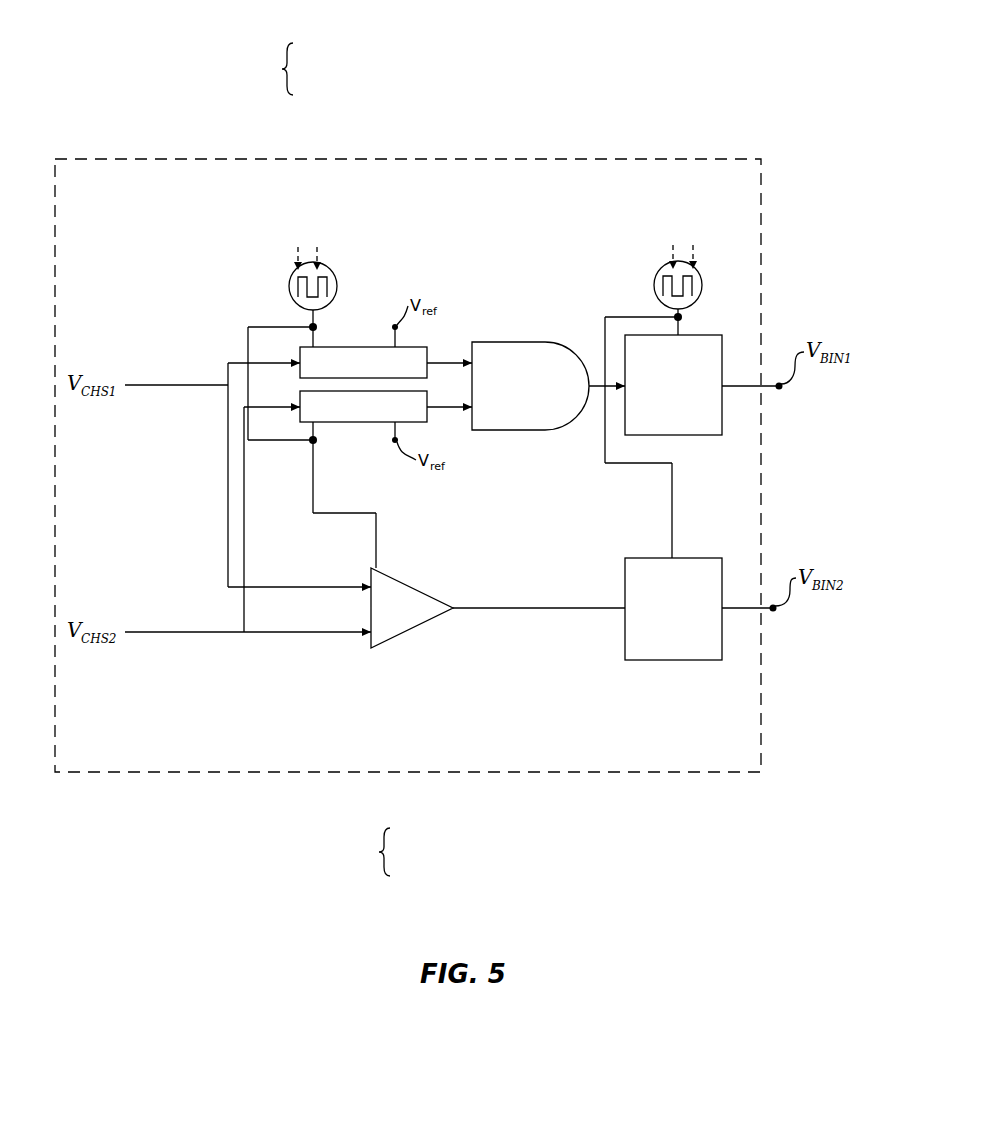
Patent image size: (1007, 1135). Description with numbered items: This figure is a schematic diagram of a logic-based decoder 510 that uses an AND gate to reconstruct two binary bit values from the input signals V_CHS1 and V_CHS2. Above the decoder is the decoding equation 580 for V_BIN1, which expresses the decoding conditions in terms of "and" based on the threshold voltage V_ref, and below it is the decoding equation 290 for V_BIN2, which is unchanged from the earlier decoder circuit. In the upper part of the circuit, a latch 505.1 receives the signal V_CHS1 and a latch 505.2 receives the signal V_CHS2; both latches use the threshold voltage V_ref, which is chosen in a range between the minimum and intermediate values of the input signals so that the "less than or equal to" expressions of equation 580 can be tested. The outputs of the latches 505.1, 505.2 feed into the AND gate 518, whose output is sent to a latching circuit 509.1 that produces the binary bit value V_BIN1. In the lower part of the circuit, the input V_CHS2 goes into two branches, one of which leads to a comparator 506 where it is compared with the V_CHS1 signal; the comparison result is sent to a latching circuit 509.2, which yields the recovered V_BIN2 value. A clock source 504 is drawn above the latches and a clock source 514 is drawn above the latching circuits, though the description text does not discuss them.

The decoding equation for V_BIN1 580 is at (193, 69).
The decoding equation for V_BIN2 290 is at (291, 861).
The logic-based decoder 510 is at (438, 220).
The clock source 504 is at (337, 292).
The clock source 514 is at (703, 291).
The latch 505.1 is at (388, 373).
The latch 505.2 is at (388, 416).
The AND gate 518 is at (545, 375).
The latching circuit 509.1 is at (697, 373).
The latching circuit 509.2 is at (697, 596).
The comparator 506 is at (416, 619).